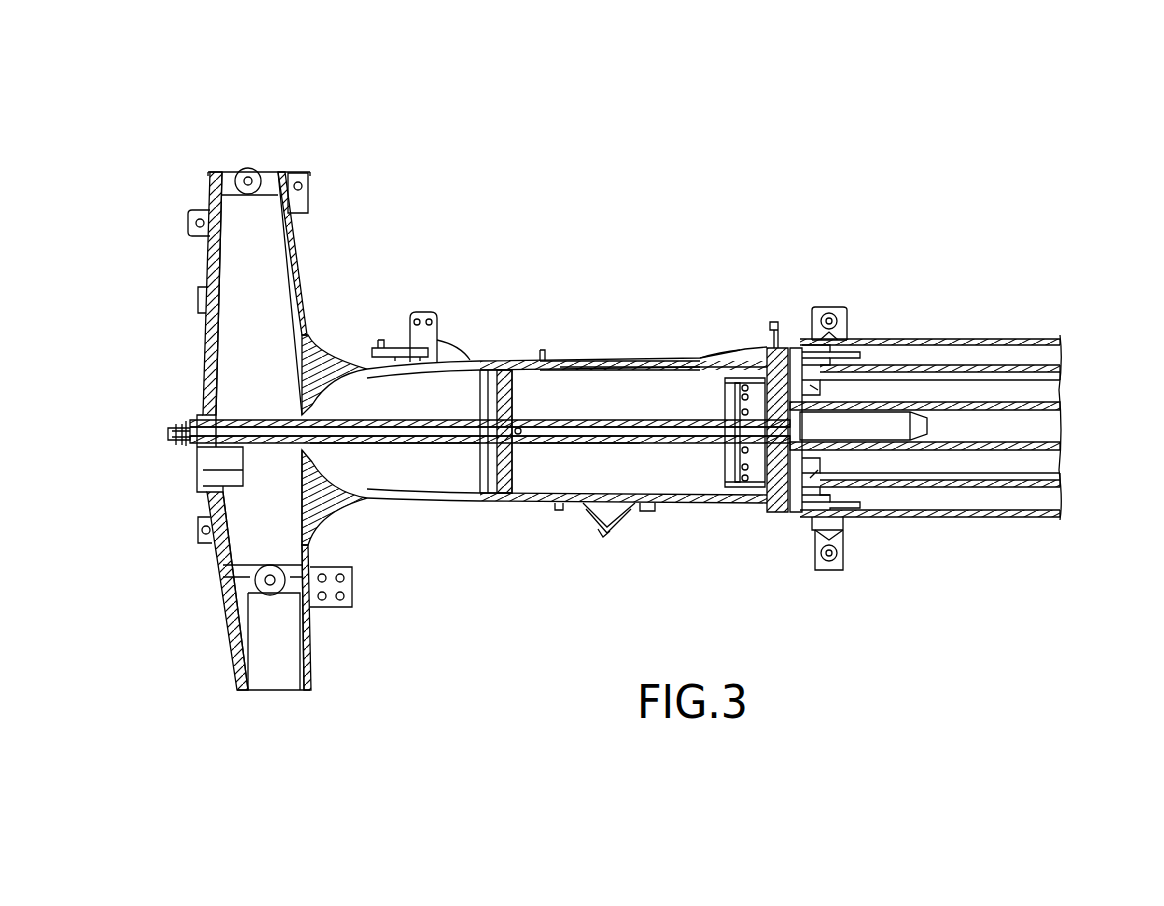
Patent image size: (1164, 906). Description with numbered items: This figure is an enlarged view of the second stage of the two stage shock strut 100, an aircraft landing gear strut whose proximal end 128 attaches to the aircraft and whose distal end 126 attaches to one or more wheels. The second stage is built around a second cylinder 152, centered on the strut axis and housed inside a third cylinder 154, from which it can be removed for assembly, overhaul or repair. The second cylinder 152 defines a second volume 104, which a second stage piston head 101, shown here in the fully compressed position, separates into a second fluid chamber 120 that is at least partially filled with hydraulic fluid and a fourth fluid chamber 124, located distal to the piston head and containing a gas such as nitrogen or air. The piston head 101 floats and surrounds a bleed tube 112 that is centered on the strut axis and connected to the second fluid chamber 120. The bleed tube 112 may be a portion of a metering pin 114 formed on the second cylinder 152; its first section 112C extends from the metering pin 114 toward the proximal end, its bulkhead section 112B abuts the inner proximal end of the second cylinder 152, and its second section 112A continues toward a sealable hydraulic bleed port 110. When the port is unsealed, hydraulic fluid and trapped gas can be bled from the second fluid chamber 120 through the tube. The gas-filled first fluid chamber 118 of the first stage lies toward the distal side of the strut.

The two stage shock strut 100 is at (180, 138).
The second stage piston head 101 is at (733, 480).
The second volume 104 is at (690, 388).
The hydraulic bleed port 110 is at (178, 430).
The bleed tube 112 is at (682, 445).
The second section 112A is at (395, 455).
The bulkhead section 112B is at (500, 505).
The first section 112C is at (650, 455).
The metering pin 114 is at (960, 452).
The first fluid chamber 118 is at (1045, 460).
The second fluid chamber 120 is at (573, 473).
The fourth fluid chamber 124 is at (773, 390).
The distal end 126 is at (1085, 430).
The proximal end 128 is at (172, 455).
The second cylinder 152 is at (640, 368).
The third cylinder 154 is at (565, 358).